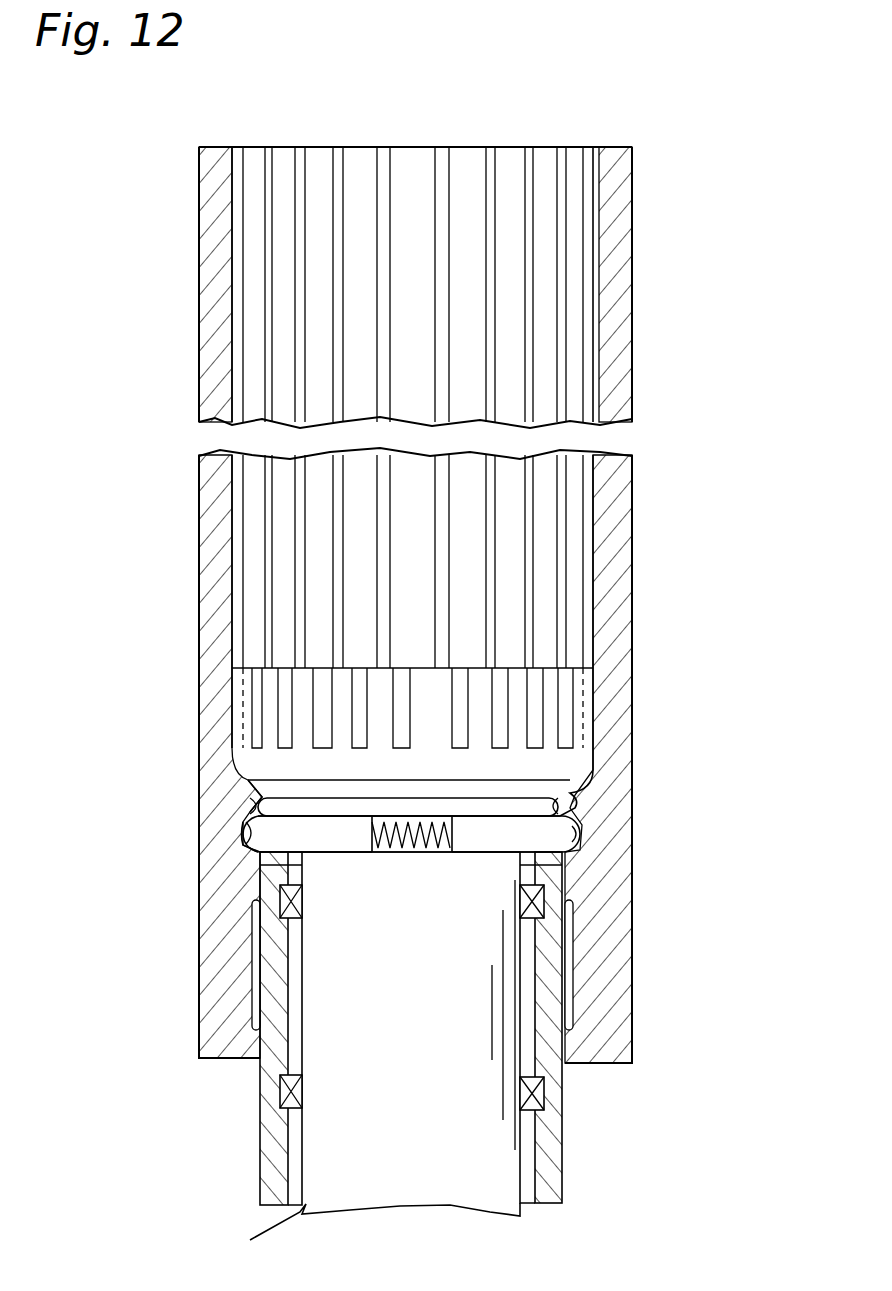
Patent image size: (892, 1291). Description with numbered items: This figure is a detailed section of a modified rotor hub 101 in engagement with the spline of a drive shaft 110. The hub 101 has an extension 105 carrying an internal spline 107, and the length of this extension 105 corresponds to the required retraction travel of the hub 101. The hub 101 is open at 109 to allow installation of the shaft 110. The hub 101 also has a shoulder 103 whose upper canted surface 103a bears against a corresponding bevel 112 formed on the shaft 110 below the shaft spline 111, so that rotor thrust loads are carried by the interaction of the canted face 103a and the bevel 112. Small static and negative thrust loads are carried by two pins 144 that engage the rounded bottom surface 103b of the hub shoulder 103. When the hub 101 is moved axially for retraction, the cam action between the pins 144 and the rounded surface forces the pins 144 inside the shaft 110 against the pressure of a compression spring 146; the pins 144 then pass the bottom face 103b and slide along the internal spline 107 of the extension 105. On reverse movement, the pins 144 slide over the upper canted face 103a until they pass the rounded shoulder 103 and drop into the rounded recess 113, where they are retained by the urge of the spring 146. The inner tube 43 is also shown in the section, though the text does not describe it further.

The rotor hub 101 is at (180, 977).
The inner tube 43 is at (268, 1128).
The shoulder 103 is at (244, 810).
The upper canted surface 103a is at (252, 794).
The rounded bottom surface 103b is at (250, 822).
The extension 105 is at (625, 286).
The internal spline 107 is at (294, 570).
The opening 109 is at (371, 147).
The shaft 110 is at (308, 1216).
The spline 111 is at (540, 735).
The bevel 112 is at (562, 795).
The rounded recess 113 is at (582, 846).
The pins 144 is at (356, 845).
The compression spring 146 is at (420, 853).